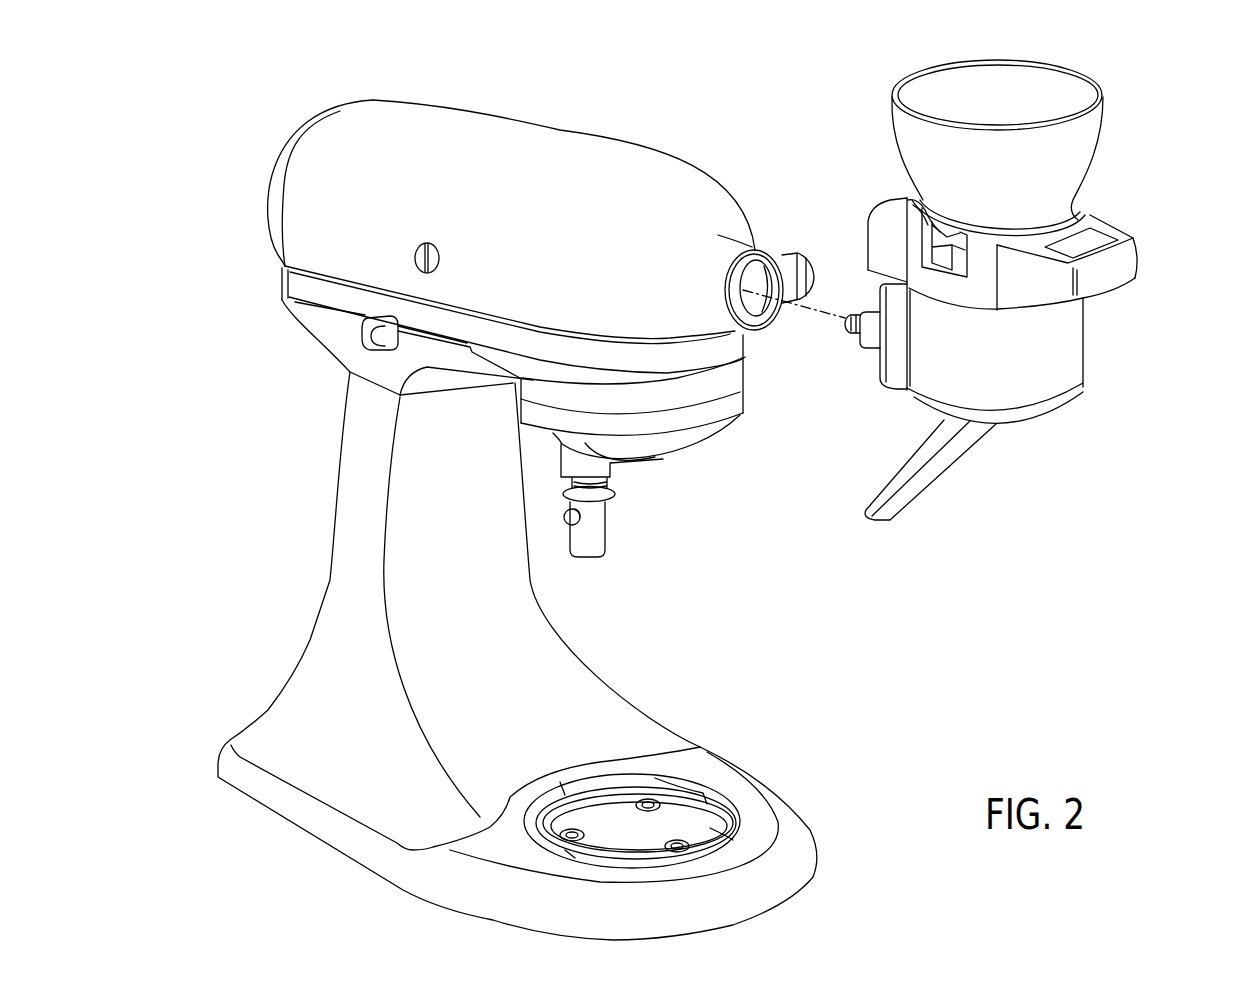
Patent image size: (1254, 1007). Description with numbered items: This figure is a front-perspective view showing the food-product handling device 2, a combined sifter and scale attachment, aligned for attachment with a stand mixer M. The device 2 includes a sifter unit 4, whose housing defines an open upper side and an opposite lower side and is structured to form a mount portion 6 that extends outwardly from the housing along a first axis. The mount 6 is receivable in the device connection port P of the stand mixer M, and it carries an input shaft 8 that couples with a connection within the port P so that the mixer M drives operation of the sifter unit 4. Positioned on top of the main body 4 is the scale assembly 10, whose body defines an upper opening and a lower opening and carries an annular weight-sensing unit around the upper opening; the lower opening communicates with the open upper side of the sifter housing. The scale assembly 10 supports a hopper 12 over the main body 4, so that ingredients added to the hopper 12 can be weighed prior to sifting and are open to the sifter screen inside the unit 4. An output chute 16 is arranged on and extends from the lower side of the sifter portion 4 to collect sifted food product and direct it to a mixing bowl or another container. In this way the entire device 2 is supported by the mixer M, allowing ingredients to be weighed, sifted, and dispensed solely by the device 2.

The food-product handling device 2 is at (1192, 160).
The sifter unit 4 is at (1093, 374).
The mount portion 6 is at (865, 332).
The input shaft 8 is at (848, 313).
The scale assembly 10 is at (1147, 250).
The hopper 12 is at (1090, 133).
The output chute 16 is at (952, 448).
The device connection port P is at (752, 283).
The stand mixer M is at (728, 449).